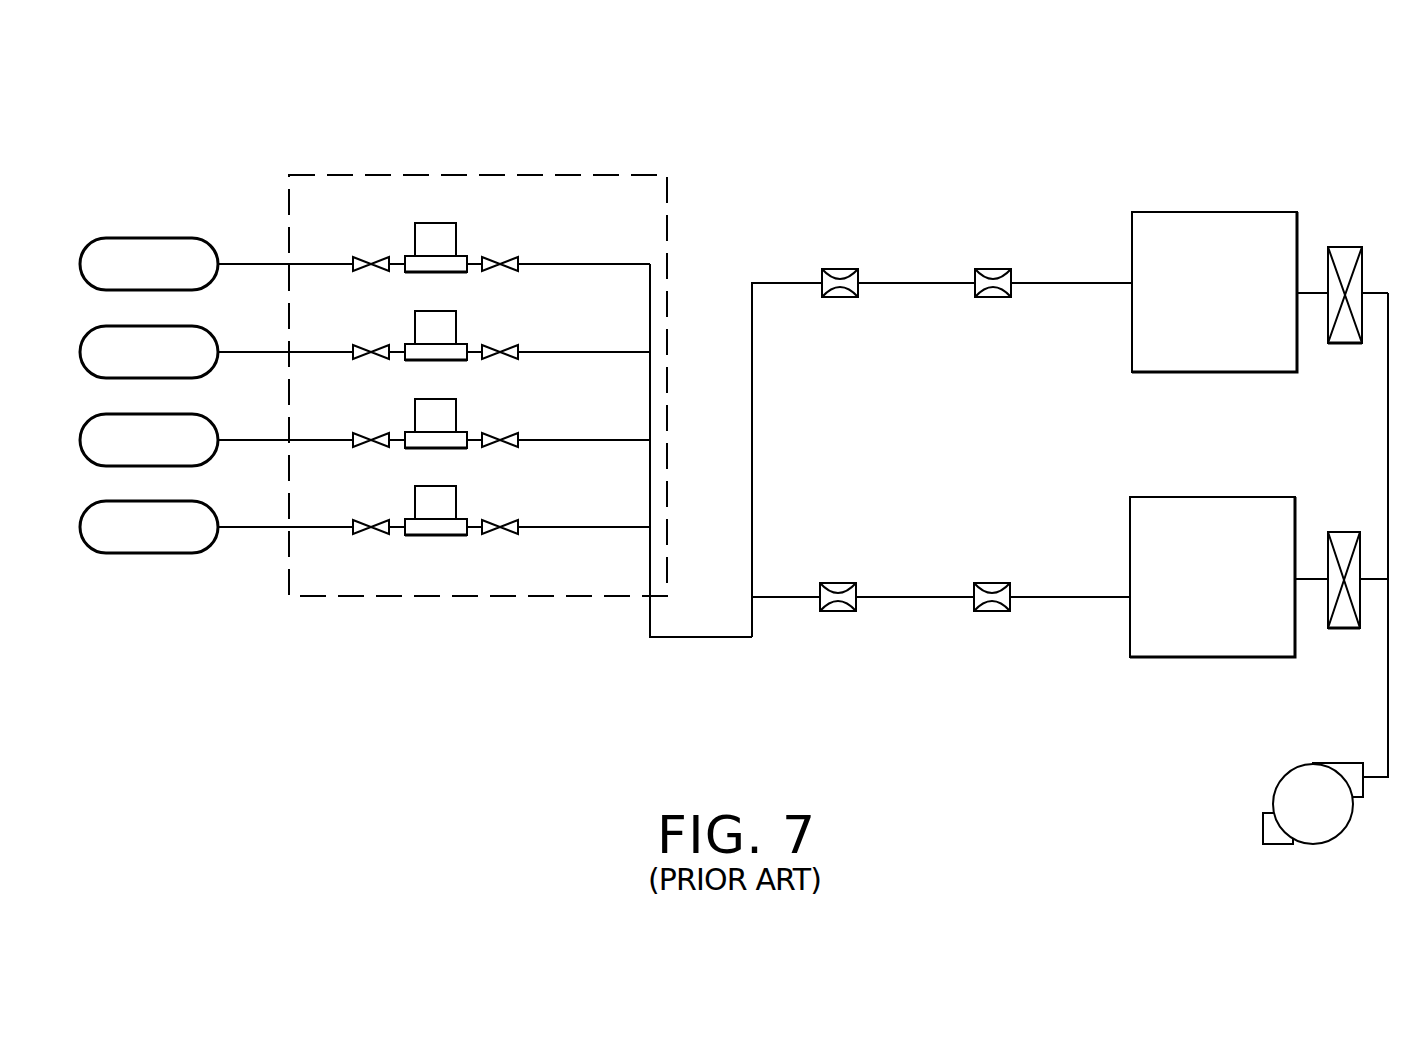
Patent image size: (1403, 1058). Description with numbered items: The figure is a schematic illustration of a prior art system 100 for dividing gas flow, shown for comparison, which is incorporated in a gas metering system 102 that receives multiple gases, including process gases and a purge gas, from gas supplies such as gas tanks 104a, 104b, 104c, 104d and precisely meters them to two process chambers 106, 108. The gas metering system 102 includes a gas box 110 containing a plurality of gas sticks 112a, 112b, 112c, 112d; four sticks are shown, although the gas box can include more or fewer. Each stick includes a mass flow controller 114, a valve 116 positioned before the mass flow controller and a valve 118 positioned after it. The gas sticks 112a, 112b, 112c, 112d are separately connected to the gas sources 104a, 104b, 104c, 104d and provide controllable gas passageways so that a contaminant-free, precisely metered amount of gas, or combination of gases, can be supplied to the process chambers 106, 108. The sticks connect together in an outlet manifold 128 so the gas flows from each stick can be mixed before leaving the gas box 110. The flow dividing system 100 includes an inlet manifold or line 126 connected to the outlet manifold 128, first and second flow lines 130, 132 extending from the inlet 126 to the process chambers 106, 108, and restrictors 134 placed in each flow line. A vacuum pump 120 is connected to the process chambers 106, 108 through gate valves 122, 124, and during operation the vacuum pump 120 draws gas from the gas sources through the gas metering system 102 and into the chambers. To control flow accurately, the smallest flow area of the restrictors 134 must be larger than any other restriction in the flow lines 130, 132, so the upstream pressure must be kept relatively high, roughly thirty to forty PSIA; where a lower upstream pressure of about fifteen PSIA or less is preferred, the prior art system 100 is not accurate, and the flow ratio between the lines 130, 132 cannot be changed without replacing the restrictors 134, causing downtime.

The system for dividing flow 100 is at (927, 197).
The gas metering system 102 is at (713, 100).
The gas supply 104a is at (206, 240).
The gas supply 104b is at (206, 328).
The gas supply 104c is at (206, 416).
The gas supply 104d is at (206, 503).
The process chamber 106 is at (1213, 212).
The process chamber 108 is at (1210, 497).
The gas box 110 is at (511, 176).
The gas stick 112a is at (570, 264).
The gas stick 112b is at (570, 352).
The gas stick 112c is at (570, 440).
The gas stick 112d is at (570, 527).
The mass flow controller 114 is at (433, 223).
The valve 116 is at (372, 256).
The valve 118 is at (500, 262).
The vacuum pump 120 is at (1333, 846).
The gate valve 122 is at (1345, 247).
The gate valve 124 is at (1345, 532).
The inlet manifold 126 is at (753, 455).
The outlet manifold 128 is at (650, 557).
The first flow line 130 is at (913, 284).
The second flow line 132 is at (910, 598).
The restrictor 134 is at (838, 269).